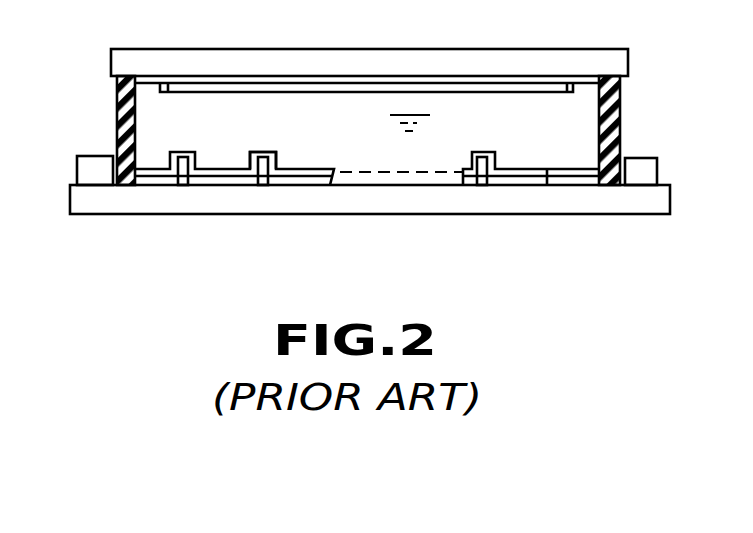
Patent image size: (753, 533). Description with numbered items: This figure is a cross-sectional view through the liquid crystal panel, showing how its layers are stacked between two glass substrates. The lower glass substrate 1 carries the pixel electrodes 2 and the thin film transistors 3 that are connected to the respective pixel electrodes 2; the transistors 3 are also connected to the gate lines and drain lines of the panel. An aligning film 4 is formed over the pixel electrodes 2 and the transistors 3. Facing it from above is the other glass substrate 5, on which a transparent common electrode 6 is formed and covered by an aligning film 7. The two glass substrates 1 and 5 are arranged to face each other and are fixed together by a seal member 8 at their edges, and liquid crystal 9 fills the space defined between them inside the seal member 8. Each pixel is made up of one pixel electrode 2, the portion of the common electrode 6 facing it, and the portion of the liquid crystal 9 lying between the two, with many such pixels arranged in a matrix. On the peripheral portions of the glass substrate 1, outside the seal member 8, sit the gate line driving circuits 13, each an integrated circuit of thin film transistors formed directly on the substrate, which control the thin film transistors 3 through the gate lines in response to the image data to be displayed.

The glass substrate 1 is at (577, 215).
The pixel electrodes 2 is at (222, 182).
The thin film transistors 3 is at (194, 160).
The aligning film 4 is at (265, 152).
The glass substrate 5 is at (590, 50).
The transparent common electrode 6 is at (323, 83).
The aligning film 7 is at (540, 93).
The seal member 8 is at (136, 104).
The liquid crystal 9 is at (468, 110).
The gate line driving circuits 13 is at (88, 156).